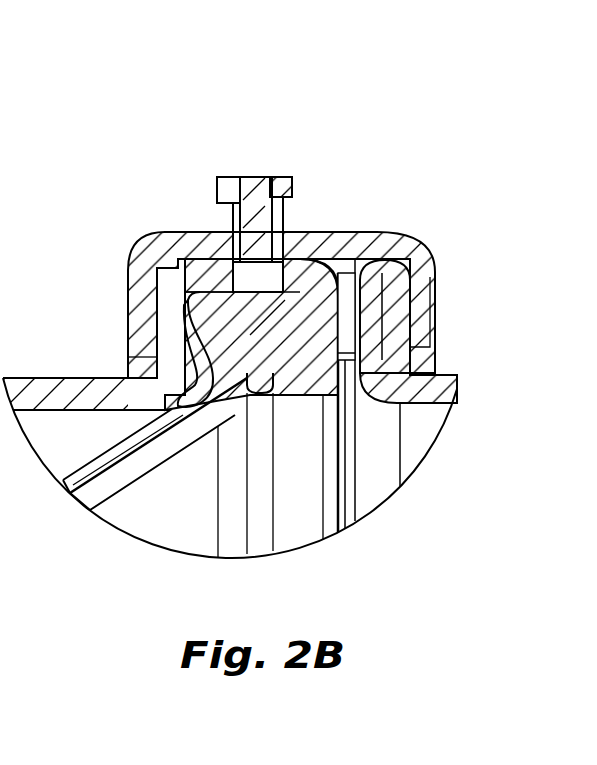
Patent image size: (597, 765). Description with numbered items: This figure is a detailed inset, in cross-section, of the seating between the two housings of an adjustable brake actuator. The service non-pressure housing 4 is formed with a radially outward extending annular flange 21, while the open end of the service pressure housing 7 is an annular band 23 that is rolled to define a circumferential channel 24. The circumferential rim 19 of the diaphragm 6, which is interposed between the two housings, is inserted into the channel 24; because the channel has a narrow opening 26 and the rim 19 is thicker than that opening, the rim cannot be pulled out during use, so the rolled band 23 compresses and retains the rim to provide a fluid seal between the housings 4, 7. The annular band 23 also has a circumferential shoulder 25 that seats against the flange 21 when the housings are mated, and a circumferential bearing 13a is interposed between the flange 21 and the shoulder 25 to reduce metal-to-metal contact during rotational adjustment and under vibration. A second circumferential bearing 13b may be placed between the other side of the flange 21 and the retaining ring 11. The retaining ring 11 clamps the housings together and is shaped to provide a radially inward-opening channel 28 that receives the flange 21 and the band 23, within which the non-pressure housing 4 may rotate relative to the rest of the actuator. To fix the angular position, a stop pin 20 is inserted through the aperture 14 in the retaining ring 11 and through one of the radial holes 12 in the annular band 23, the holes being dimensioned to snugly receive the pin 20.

The service non-pressure housing 4 is at (449, 452).
The diaphragm 6 is at (123, 463).
The service pressure housing 7 is at (78, 380).
The retaining ring 11 is at (172, 242).
The radial hole 12 is at (278, 262).
The circumferential bearing 13a is at (343, 335).
The second circumferential bearing 13b is at (397, 335).
The aperture 14 is at (272, 230).
The circumferential rim 19 is at (265, 318).
The stop pin 20 is at (281, 193).
The annular flange 21 is at (367, 307).
The annular band 23 is at (210, 278).
The circumferential channel 24 is at (185, 310).
The circumferential shoulder 25 is at (327, 263).
The narrow opening 26 is at (243, 397).
The radially inward-opening channel 28 is at (207, 258).